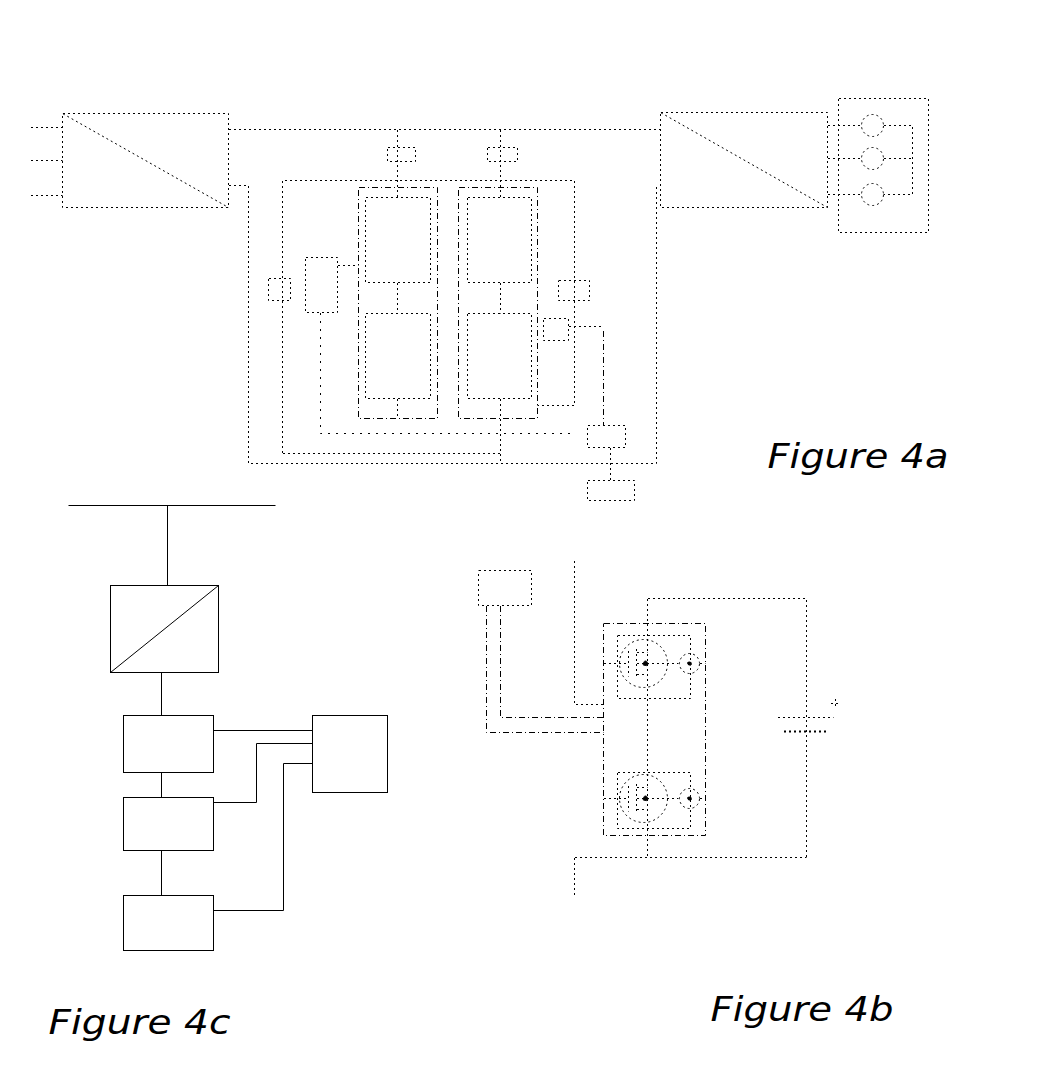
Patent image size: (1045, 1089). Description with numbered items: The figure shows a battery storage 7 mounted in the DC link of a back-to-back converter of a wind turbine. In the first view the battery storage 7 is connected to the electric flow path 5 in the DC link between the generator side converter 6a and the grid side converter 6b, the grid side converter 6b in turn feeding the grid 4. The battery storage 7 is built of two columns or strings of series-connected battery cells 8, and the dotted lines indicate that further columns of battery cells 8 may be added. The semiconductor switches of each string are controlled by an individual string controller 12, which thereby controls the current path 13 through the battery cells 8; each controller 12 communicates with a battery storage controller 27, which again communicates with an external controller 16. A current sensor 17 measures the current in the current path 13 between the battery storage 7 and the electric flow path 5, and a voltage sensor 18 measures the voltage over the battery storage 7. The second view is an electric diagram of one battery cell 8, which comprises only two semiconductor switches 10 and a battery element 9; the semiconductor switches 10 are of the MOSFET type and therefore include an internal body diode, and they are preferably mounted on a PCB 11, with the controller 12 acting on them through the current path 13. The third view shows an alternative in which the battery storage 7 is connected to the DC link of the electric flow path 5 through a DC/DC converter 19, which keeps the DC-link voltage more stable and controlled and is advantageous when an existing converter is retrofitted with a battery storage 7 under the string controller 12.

In FIG. 4A, the grid 4 is at (903, 232).
In FIG. 4A, the electric flow path 5 is at (362, 129).
In FIG. 4C, the electric flow path 5 is at (70, 503).
In FIG. 4A, the generator side converter 6a is at (240, 82).
In FIG. 4A, the grid side converter 6b is at (757, 112).
In FIG. 4A, the battery storage 7 is at (689, 438).
In FIG. 4A, the battery cell 8 is at (448, 326).
In FIG. 4B, the battery cell 8 is at (842, 578).
In FIG. 4C, the battery cell 8 is at (169, 833).
In FIG. 4B, the battery element 9 is at (837, 717).
In FIG. 4B, the semiconductor switch 10 is at (603, 645).
In FIG. 4B, the PCB 11 is at (703, 635).
In FIG. 4A, the controller 12 is at (335, 257).
In FIG. 4B, the controller 12 is at (513, 570).
In FIG. 4C, the controller 12 is at (340, 715).
In FIG. 4A, the current path 13 is at (397, 131).
In FIG. 4B, the current path 13 is at (574, 568).
In FIG. 4A, the external controller 16 is at (634, 485).
In FIG. 4A, the current sensor 17 is at (415, 147).
In FIG. 4A, the voltage sensor 18 is at (272, 300).
In FIG. 4C, the DC/DC converter 19 is at (220, 600).
In FIG. 4A, the battery storage controller 27 is at (625, 433).